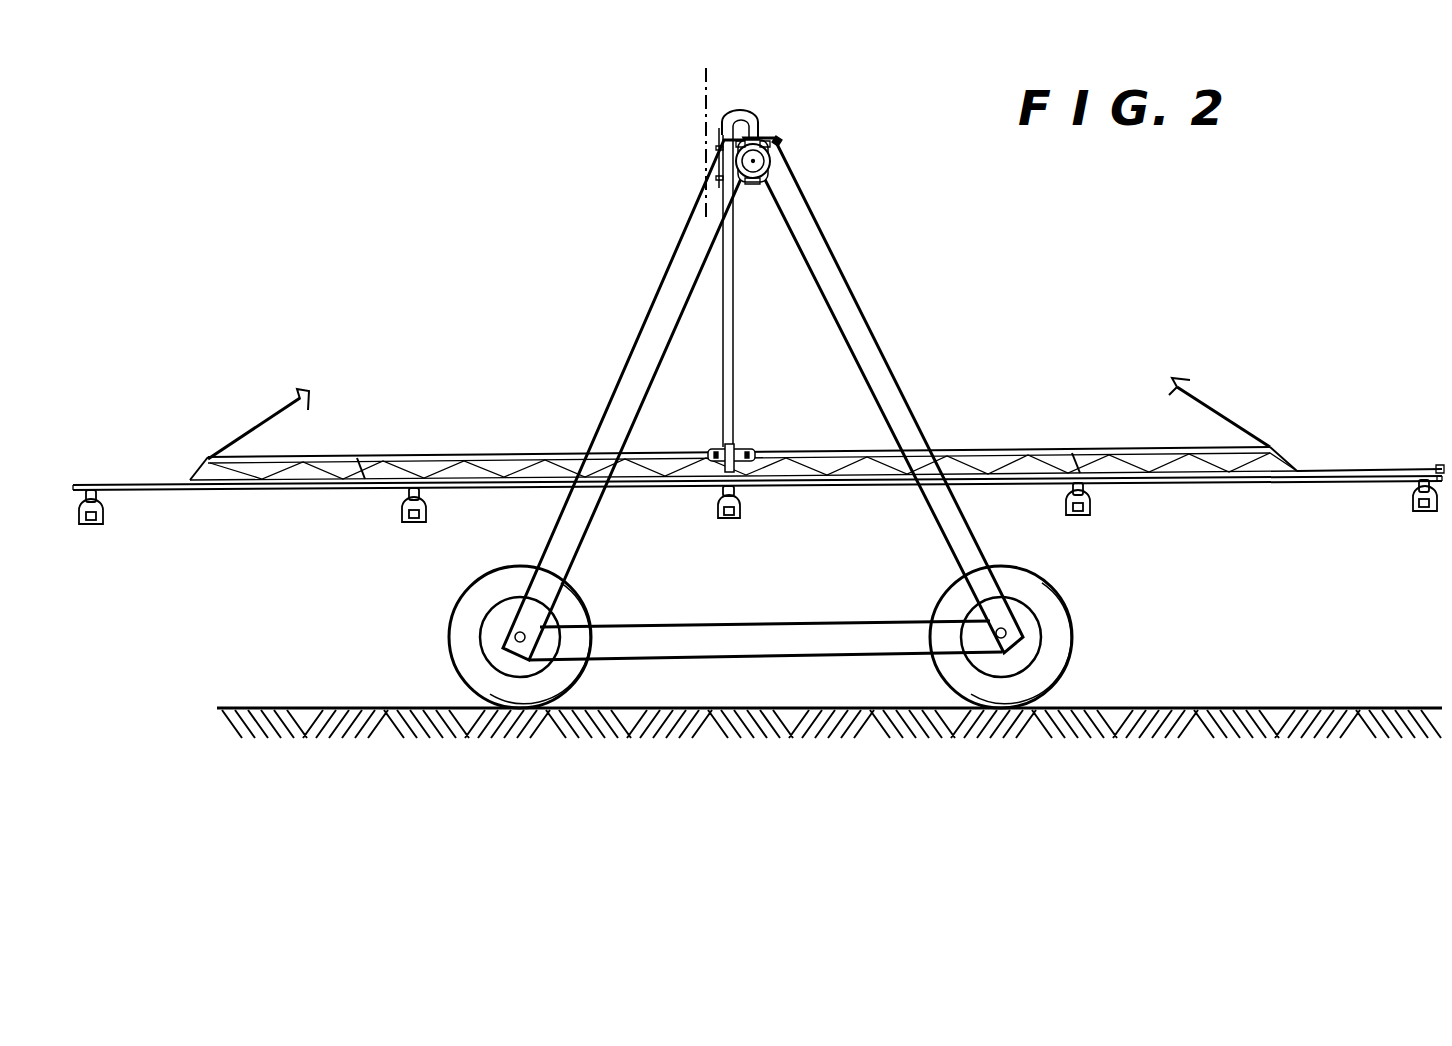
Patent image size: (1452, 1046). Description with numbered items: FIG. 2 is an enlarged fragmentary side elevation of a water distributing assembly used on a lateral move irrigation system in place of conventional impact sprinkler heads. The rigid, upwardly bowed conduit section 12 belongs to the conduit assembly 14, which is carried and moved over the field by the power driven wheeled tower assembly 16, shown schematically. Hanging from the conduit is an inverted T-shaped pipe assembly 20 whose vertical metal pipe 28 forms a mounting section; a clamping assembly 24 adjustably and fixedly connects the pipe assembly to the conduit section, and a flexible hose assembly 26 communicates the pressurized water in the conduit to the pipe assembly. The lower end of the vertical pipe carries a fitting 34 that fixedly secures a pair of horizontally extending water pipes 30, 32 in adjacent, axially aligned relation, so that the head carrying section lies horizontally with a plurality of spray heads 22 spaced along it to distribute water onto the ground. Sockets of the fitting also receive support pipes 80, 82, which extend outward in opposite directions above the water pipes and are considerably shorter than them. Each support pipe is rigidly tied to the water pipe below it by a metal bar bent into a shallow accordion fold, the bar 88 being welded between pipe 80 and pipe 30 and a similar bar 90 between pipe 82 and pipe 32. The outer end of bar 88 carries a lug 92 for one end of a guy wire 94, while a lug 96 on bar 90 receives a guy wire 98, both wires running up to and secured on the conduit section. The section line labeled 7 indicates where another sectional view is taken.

The section line 7- 7 is at (745, 87).
The conduit section 12 is at (773, 160).
The conduit assembly 14 is at (782, 138).
The wheeled tower assembly 16 is at (878, 317).
The inverted T-shaped pipe assembly 20 is at (735, 382).
The spray heads 22 is at (108, 523).
The clamping assembly 24 is at (702, 130).
The flexible hose assembly 26 is at (748, 108).
The vertical metal pipe 28 is at (735, 305).
The water pipe 30 is at (600, 490).
The water pipe 32 is at (847, 484).
The fitting 34 is at (750, 443).
The support pipe 80 is at (496, 422).
The support pipe 82 is at (1048, 408).
The accordian fold bar 88 is at (383, 433).
The accordian fold bar 90 is at (1068, 447).
The lug 92 is at (190, 478).
The guy wire 94 is at (277, 420).
The lug 96 is at (1297, 462).
The guy wire 98 is at (1220, 410).